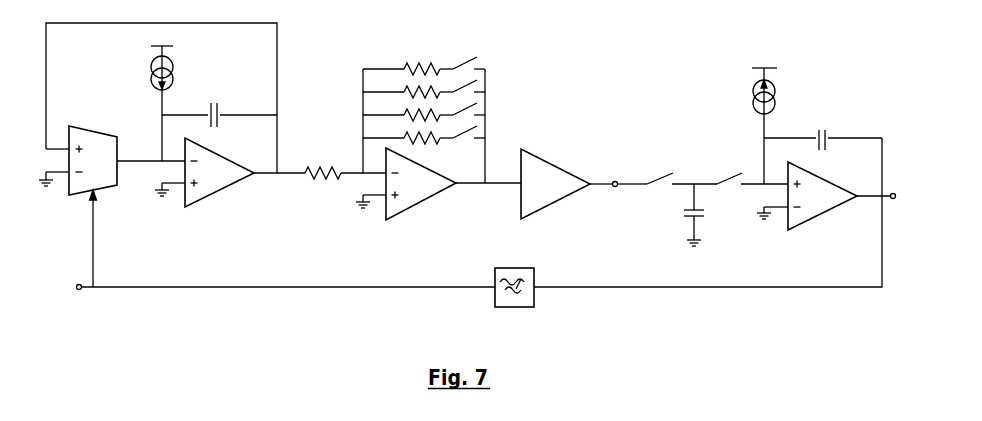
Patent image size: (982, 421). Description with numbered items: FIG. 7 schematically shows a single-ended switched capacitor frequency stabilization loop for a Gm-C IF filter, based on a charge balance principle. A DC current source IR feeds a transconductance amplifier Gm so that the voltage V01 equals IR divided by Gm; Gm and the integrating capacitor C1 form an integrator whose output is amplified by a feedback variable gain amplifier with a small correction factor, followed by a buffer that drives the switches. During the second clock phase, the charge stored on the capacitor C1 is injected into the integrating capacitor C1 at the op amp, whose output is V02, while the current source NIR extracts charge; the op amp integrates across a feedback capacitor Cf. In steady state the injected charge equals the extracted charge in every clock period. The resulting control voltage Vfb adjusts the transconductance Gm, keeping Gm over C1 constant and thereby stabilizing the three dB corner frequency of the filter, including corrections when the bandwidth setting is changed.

The transconductance Gm is at (112, 160).
The DC current source IR is at (170, 103).
The integrating capacitor C1 is at (433, 166).
The feedback capacitor Cf is at (823, 129).
The current source NIR is at (749, 126).
The voltage V01 is at (612, 195).
The op amp output voltage V02 is at (910, 195).
The control voltage Vfb is at (78, 298).